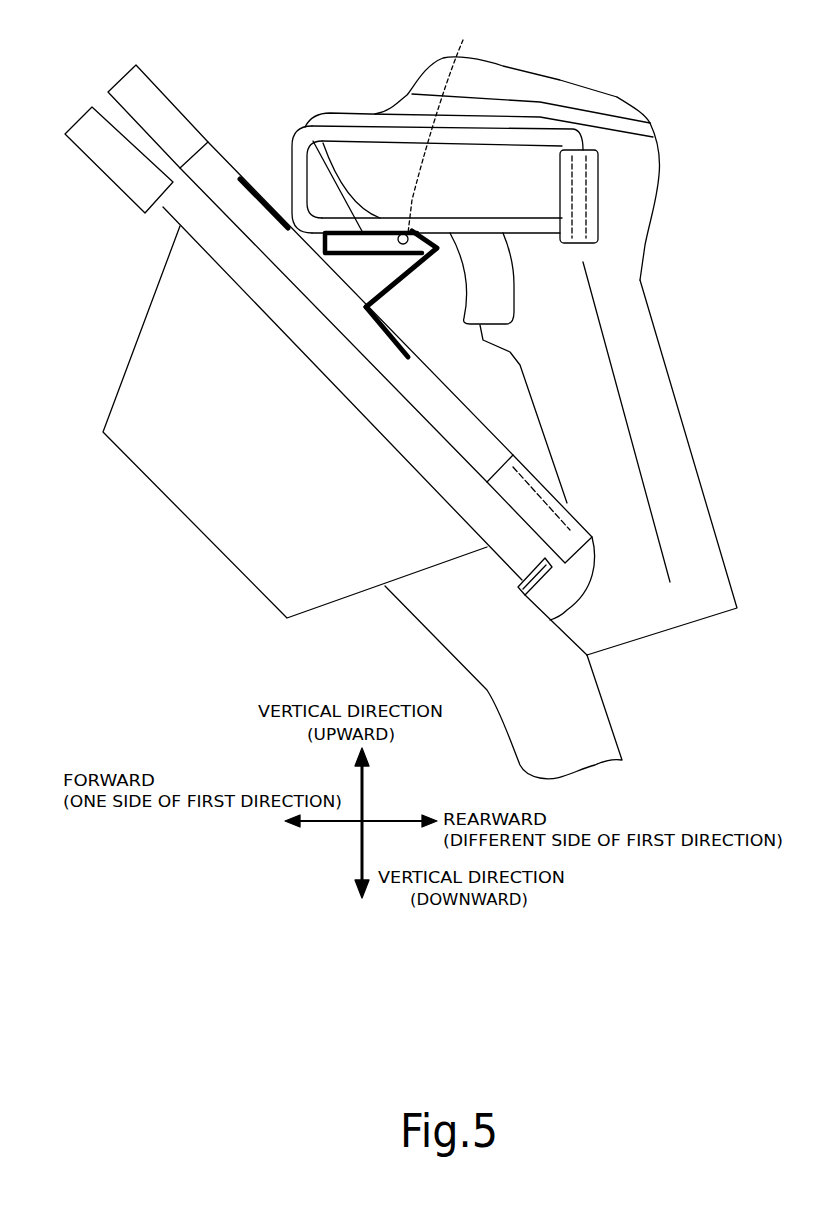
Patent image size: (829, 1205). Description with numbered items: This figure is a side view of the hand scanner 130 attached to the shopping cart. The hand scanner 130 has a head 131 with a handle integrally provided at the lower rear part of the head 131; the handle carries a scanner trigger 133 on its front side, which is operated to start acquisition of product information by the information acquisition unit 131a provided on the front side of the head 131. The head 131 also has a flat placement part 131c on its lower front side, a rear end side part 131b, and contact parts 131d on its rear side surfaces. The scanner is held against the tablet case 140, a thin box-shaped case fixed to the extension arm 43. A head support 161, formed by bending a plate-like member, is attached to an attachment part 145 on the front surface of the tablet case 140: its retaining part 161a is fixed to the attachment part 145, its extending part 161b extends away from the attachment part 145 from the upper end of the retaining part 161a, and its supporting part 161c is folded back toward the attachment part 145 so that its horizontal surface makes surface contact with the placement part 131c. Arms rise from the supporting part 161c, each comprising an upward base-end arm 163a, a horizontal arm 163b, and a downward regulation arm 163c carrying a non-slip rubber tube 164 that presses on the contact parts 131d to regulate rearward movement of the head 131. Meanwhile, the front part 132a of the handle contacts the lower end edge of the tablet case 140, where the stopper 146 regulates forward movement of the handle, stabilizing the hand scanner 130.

The tablet case 140 is at (111, 110).
The head support 161 is at (263, 207).
The retaining part 161a is at (390, 335).
The extending part 161b is at (380, 283).
The supporting part 161c is at (305, 268).
The attachment part 145 is at (358, 303).
The base-end arm 163a is at (298, 173).
The horizontal arm 163b is at (395, 133).
The regulation arm 163c is at (600, 173).
The rubber tube 164 is at (596, 222).
The head 131 is at (528, 93).
The information acquisition unit 131a is at (370, 115).
The rear end side part 131b is at (617, 97).
The placement part 131c is at (448, 123).
The contact part 131d is at (605, 160).
The scanner trigger 133 is at (460, 292).
The hand scanner 130 is at (661, 345).
The front part 132a is at (567, 503).
The stopper 146 is at (530, 460).
The extension arm 43 is at (537, 738).